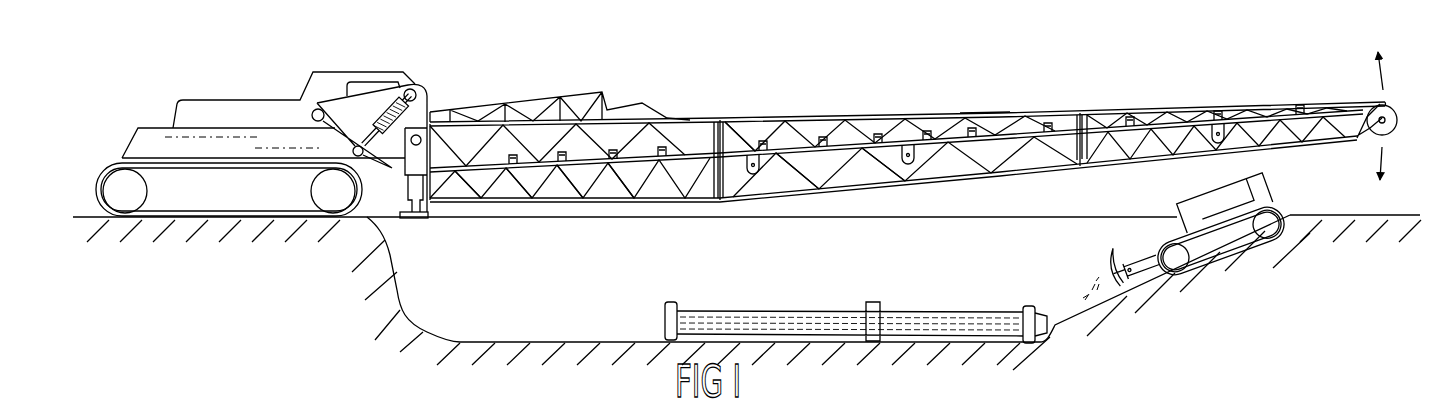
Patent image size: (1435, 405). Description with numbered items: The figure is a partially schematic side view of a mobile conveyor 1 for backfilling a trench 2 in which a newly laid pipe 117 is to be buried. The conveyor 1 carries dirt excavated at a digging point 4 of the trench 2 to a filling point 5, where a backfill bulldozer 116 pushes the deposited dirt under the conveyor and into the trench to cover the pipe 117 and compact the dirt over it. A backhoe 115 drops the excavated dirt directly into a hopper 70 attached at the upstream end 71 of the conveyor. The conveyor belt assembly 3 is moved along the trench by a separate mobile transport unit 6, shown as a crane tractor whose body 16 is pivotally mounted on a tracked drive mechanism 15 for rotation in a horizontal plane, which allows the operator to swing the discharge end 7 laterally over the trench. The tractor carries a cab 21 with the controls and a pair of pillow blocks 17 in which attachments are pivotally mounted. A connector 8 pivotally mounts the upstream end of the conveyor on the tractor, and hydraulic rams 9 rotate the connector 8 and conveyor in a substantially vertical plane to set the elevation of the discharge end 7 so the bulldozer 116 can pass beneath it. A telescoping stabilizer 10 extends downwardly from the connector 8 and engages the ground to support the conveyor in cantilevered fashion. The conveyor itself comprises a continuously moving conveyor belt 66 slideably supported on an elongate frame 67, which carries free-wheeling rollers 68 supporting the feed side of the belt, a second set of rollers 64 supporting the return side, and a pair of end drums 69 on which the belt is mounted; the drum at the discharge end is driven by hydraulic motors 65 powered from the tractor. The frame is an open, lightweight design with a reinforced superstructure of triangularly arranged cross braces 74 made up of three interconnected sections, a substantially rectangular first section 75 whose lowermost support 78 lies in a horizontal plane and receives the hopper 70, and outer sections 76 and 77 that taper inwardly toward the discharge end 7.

The mobile conveyor 1 is at (662, 95).
The trench 2 is at (903, 245).
The conveyor belt assembly 3 is at (802, 114).
The digging point 4 is at (423, 288).
The filling point 5 is at (1352, 238).
The mobile transport unit 6 is at (237, 96).
The discharge end 7 is at (1366, 107).
The connector 8 is at (386, 86).
The rams 9 is at (389, 135).
The telescoping stabilizer 10 is at (408, 205).
The tracked drive mechanism 15 is at (108, 170).
The crane tractor body 16 is at (137, 137).
The pillow blocks 17 is at (311, 121).
The cab 21 is at (357, 86).
The return rollers 64 is at (770, 162).
The hydraulic motors 65 is at (1393, 133).
The conveyor belt 66 is at (745, 135).
The elongate frame 67 is at (1026, 173).
The free-wheeling rollers 68 is at (986, 114).
The end drums 69 is at (1392, 118).
The hopper 70 is at (547, 105).
The upstream end 71 is at (477, 201).
The cross braces 74 is at (643, 201).
The first superstructure section 75 is at (573, 201).
The outer superstructure segment 76 is at (797, 201).
The outer superstructure section 77 is at (1182, 163).
The lowermost support 78 is at (533, 201).
The backhoe 115 is at (214, 404).
The backfill bulldozer 116 is at (1272, 192).
The pipe 117 is at (914, 311).